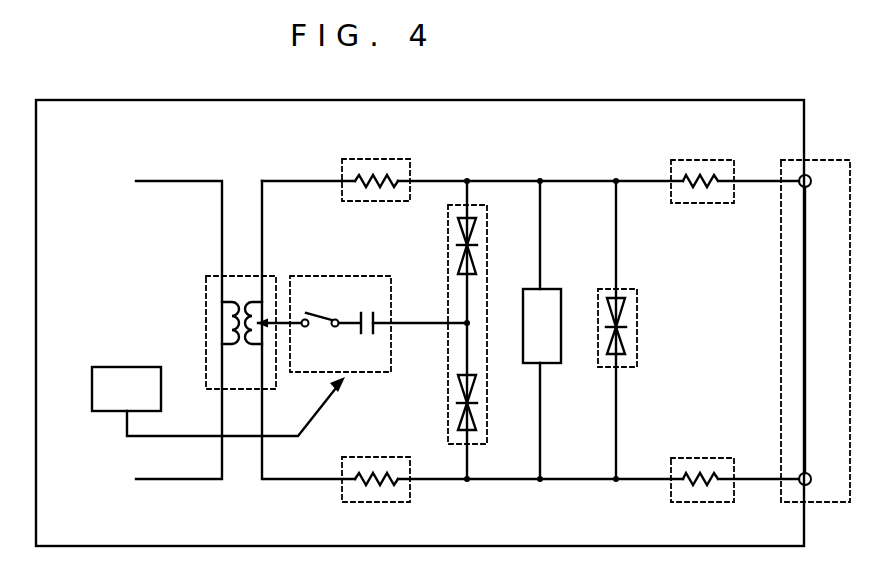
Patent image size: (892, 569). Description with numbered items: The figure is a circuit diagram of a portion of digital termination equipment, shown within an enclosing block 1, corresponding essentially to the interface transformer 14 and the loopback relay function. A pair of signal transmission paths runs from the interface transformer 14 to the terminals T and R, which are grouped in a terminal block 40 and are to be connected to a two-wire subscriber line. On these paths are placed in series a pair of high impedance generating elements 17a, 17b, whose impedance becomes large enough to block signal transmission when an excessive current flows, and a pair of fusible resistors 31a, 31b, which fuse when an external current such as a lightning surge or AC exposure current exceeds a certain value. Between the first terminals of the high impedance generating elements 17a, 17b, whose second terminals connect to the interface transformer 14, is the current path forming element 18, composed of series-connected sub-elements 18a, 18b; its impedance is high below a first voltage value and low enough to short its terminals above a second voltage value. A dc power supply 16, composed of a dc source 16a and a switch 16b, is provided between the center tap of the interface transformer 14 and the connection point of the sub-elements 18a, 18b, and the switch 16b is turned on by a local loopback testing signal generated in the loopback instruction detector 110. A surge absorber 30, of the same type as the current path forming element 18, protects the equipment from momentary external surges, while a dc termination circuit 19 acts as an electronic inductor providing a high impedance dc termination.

The telephone circuit / housing 1 is at (280, 99).
The interface transformer 14 is at (215, 276).
The dc power supply 16 is at (343, 276).
The dc source 16a is at (372, 333).
The switch 16b is at (326, 333).
The high impedance generating element 17a is at (380, 159).
The high impedance generating element 17b is at (372, 502).
The current path forming element 18 is at (487, 242).
The sub-element 18a is at (460, 240).
The sub-element 18b is at (478, 404).
The dc termination circuit 19 is at (553, 289).
The surge absorber 30 is at (648, 312).
The fusible resistor 31a is at (690, 160).
The fusible resistor 31b is at (692, 458).
The terminal block 40 is at (781, 168).
The loopback instruction detector 110 is at (148, 365).